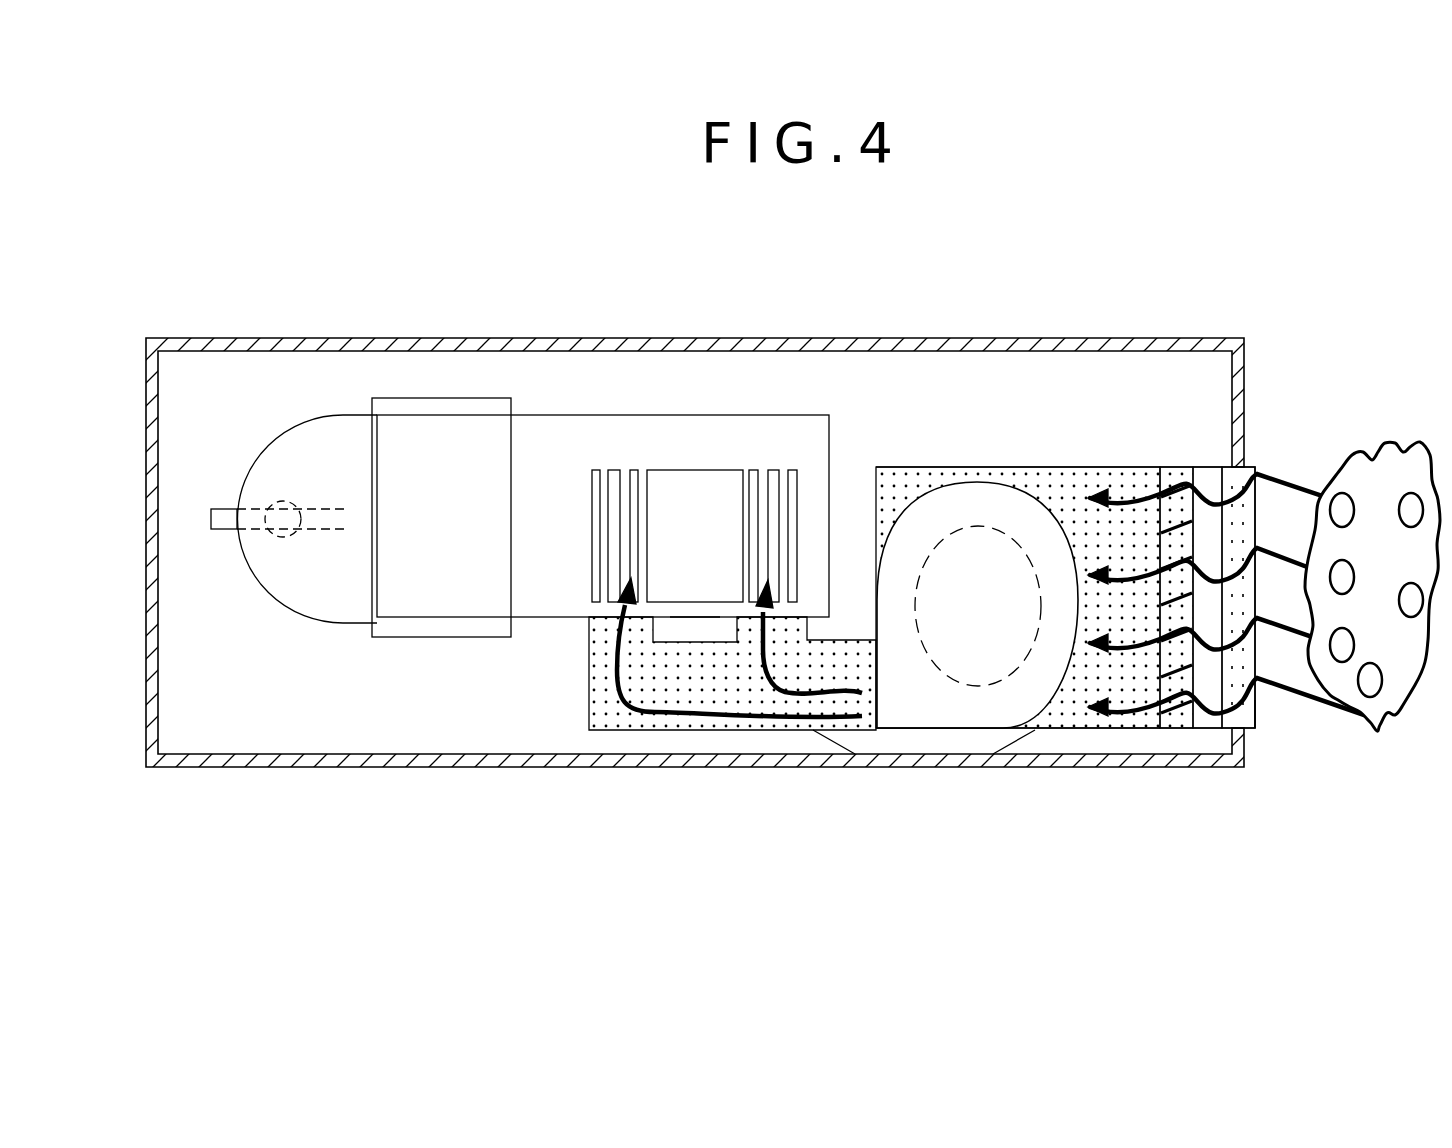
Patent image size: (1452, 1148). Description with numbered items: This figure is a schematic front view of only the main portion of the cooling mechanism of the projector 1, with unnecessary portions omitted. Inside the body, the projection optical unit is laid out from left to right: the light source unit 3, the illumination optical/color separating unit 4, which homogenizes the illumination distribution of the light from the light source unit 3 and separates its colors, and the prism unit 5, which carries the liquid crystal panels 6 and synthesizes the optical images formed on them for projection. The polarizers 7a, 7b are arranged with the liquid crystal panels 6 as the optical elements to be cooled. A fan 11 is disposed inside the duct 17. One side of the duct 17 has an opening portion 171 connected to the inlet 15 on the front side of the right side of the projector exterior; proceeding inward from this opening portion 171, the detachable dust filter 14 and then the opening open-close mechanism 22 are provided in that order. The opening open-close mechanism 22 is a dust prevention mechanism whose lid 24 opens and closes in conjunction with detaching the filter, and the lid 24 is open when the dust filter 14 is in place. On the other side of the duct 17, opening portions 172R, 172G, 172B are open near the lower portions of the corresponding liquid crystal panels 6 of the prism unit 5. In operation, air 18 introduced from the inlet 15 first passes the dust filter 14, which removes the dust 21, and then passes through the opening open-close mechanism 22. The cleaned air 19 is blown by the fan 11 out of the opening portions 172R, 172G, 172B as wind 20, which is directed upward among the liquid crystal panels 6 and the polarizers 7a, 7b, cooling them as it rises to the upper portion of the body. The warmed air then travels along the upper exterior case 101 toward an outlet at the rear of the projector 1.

The projector 1 is at (203, 338).
The light source unit 3 is at (332, 453).
The upper exterior case 101 is at (481, 338).
The illumination optical/color separating unit 4 is at (580, 435).
The prism unit 5 is at (682, 502).
The liquid crystal panels 6 is at (800, 513).
The polarizer 7a is at (780, 467).
The polarizer 7b is at (758, 472).
The fan 11 is at (988, 508).
The dust filter 14 is at (1208, 720).
The inlet 15 is at (1257, 470).
The duct 17 is at (1017, 767).
The air 18 is at (1367, 487).
The air 19 is at (1127, 722).
The wind 20 is at (730, 707).
The dust 21 is at (1407, 617).
The opening open-close mechanism 22 is at (1207, 455).
The lid 24 is at (1177, 480).
The opening portion 171 is at (1258, 717).
The opening portion 172B is at (600, 619).
The opening portion 172G is at (697, 620).
The opening portion 172R is at (788, 620).